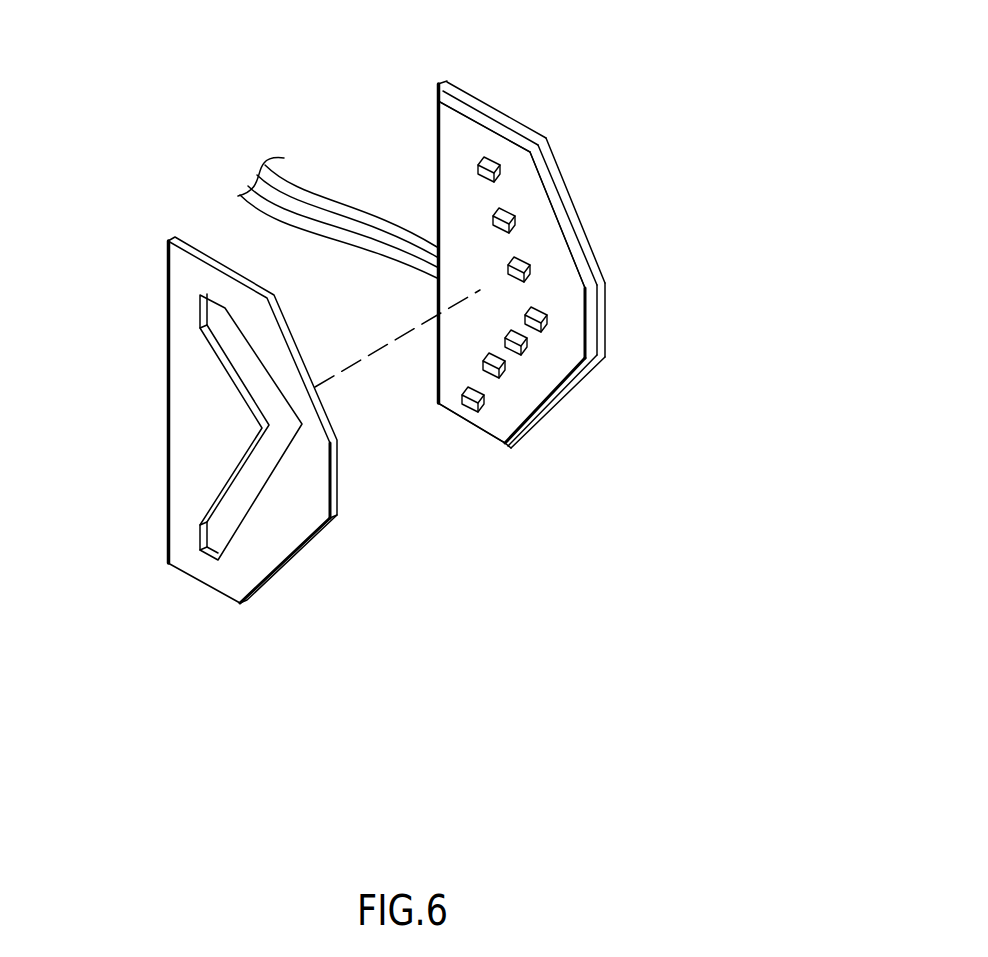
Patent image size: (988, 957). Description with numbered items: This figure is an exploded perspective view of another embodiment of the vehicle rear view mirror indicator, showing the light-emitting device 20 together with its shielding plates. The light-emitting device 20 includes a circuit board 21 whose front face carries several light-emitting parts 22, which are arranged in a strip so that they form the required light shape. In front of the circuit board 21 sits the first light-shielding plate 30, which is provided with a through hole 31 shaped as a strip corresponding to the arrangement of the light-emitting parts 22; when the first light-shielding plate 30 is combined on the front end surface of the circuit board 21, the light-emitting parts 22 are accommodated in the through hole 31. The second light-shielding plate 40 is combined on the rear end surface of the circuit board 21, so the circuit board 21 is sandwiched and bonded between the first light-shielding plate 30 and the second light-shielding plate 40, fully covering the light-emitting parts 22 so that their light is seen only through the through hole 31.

The light-emitting device 20 is at (448, 83).
The circuit board 21 is at (447, 376).
The light-emitting parts 22 is at (532, 270).
The first light-shielding plate 30 is at (150, 391).
The through hole 31 is at (257, 488).
The second light-shielding plate 40 is at (567, 154).